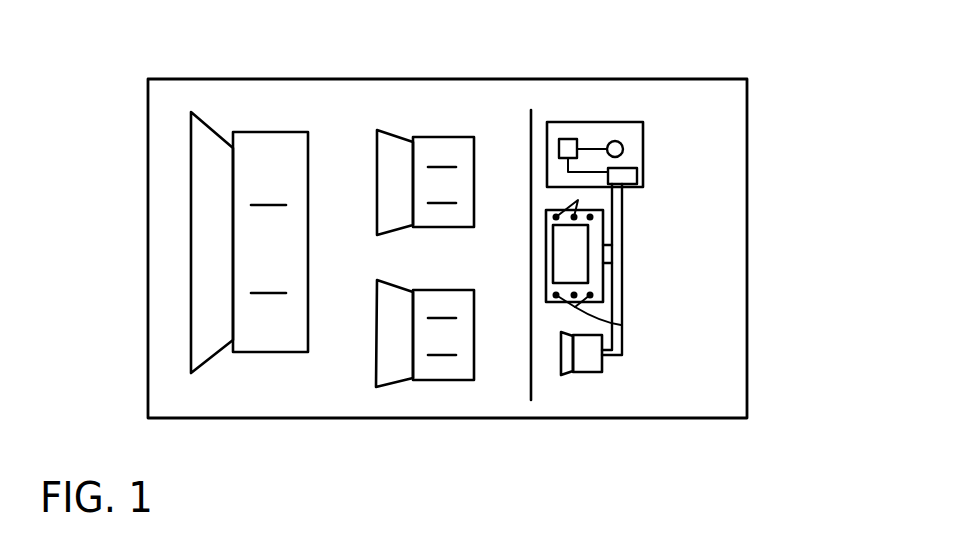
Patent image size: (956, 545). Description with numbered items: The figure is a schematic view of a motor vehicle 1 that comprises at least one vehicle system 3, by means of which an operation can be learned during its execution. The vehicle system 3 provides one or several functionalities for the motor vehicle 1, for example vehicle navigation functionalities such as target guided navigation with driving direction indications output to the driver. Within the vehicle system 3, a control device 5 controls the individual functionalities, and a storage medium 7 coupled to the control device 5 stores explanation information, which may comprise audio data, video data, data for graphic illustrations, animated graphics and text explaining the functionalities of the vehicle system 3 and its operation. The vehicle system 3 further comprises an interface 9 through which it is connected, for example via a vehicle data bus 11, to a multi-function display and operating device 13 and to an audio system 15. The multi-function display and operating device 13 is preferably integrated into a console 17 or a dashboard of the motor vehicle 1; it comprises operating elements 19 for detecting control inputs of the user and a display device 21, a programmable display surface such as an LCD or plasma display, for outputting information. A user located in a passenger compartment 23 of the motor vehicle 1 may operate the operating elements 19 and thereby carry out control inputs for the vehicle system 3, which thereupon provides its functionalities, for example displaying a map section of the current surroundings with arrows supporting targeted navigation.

The motor vehicle 1 is at (448, 79).
The vehicle system 3 is at (637, 130).
The control device 5 is at (570, 140).
The storage medium 7 is at (616, 141).
The interface 9 is at (637, 177).
The vehicle data bus 11 is at (621, 252).
The multi-function display and operating device 13 is at (602, 285).
The audio system 15 is at (593, 363).
The console 17 is at (530, 353).
The operating elements 19 is at (578, 200).
The display device 21 is at (588, 269).
The passenger compartment 23 is at (330, 390).